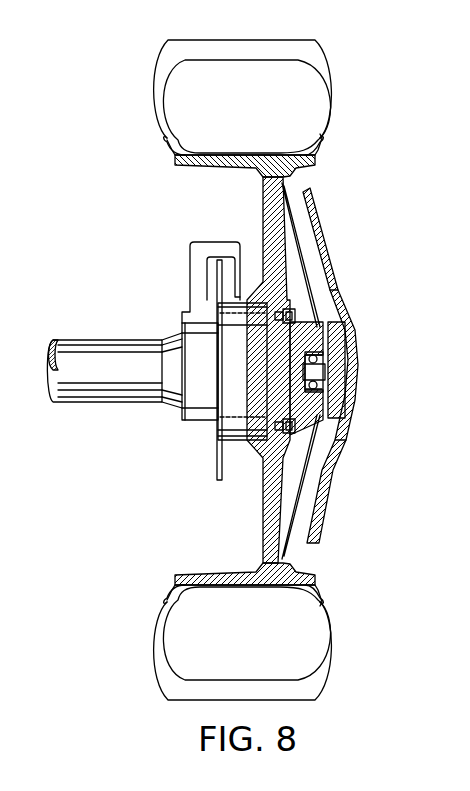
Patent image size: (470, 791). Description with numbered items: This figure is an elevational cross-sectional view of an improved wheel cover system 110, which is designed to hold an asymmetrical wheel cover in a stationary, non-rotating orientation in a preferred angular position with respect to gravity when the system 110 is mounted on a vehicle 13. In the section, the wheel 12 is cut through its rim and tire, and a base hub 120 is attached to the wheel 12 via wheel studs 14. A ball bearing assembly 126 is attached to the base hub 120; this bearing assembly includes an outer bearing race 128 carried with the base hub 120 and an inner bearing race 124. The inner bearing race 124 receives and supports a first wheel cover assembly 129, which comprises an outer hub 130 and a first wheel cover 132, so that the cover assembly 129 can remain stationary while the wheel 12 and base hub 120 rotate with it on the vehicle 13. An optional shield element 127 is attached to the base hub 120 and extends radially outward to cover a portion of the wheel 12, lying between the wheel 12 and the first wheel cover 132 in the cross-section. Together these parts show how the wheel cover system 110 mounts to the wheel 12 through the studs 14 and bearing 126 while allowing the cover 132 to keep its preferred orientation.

The wheel cover system 110 is at (359, 196).
The wheel 12 is at (243, 370).
The vehicle 13 is at (70, 405).
The wheel studs 14 is at (267, 480).
The base hub 120 is at (335, 438).
The inner bearing race 124 is at (318, 370).
The ball bearing assembly 126 is at (291, 381).
The shield element 127 is at (313, 460).
The outer bearing race 128 is at (352, 392).
The first wheel cover assembly 129 is at (393, 326).
The outer hub 130 is at (357, 327).
The first wheel cover 132 is at (337, 268).